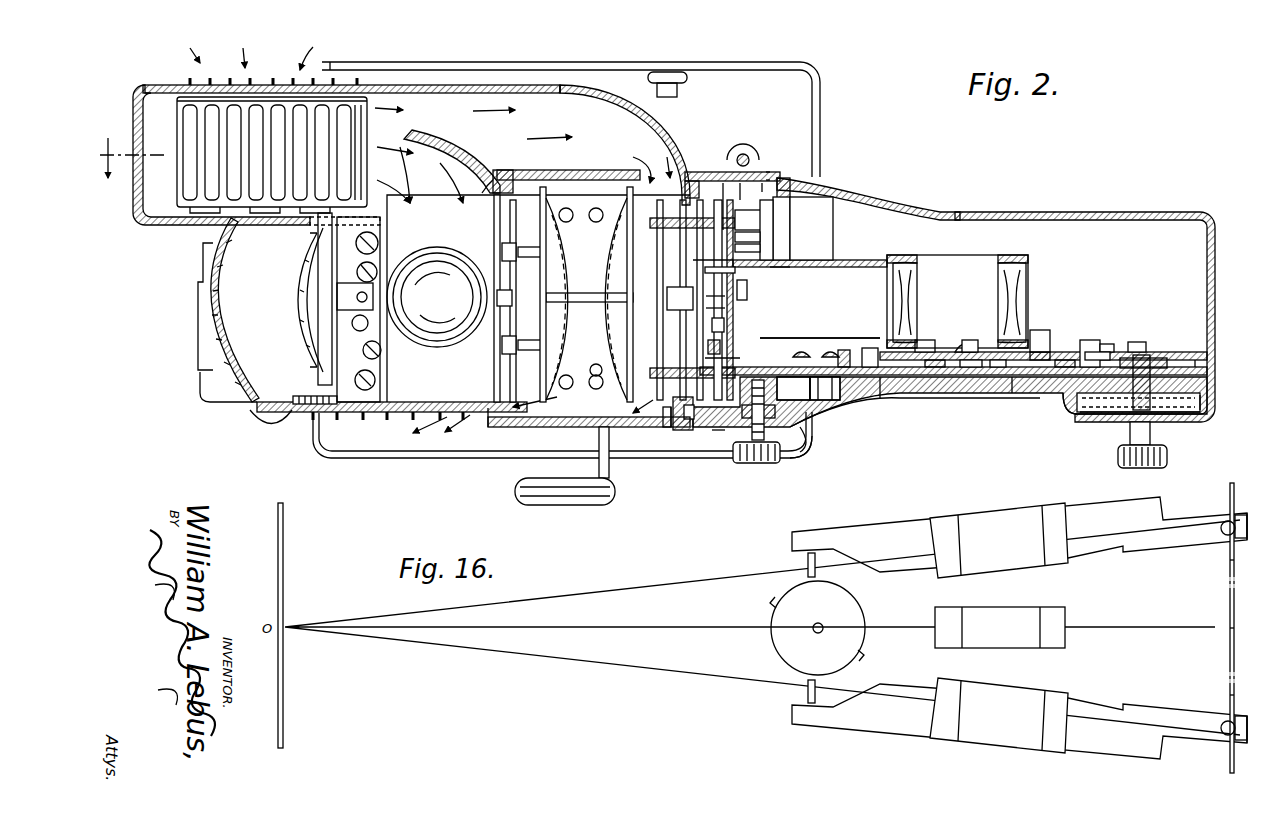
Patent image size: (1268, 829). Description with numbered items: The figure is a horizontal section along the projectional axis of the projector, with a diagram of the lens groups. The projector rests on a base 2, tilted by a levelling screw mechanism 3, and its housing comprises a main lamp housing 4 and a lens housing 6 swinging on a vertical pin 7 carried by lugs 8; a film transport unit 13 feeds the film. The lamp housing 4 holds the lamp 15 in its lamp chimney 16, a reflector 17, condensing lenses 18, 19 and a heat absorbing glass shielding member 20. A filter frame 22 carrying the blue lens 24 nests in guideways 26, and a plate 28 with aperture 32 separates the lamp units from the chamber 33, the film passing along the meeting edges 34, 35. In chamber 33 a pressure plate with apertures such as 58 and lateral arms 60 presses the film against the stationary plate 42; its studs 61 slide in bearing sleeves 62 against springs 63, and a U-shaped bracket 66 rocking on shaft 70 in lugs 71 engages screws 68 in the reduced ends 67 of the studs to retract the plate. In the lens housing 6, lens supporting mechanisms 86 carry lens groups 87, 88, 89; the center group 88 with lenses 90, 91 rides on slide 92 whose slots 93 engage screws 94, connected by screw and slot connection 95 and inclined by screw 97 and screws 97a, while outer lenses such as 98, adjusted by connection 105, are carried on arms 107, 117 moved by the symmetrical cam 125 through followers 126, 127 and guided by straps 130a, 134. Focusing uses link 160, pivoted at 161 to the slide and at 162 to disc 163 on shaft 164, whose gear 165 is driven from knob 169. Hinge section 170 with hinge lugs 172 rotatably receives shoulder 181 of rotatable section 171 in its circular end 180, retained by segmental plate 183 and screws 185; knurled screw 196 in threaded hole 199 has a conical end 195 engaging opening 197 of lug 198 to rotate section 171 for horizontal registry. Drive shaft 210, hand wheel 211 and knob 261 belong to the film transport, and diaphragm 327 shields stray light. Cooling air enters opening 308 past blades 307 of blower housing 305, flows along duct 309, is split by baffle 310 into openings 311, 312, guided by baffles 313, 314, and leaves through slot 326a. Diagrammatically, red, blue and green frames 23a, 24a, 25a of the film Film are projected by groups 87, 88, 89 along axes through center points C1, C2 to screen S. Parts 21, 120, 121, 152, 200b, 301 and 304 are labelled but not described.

In FIG. 2, the base 2 is at (470, 66).
In FIG. 2, the levelling screw mechanism 3 is at (132, 148).
In FIG. 2, the main casing or lamp housing 4 is at (248, 420).
In FIG. 2, the lens housing 6 is at (1068, 208).
In FIG. 2, the vertically disposed pin 7 is at (747, 146).
In FIG. 2, the lugs 8 is at (705, 175).
In FIG. 2, the film transport unit 13 is at (712, 97).
In FIG. 2, the lamp 15 is at (432, 330).
In FIG. 2, the lamp chimney 16 is at (500, 330).
In FIG. 2, the reflector 17 is at (305, 285).
In FIG. 2, the condensing lens 18 is at (553, 222).
In FIG. 2, the condensing lens 19 is at (625, 250).
In FIG. 2, the heat absorbing glass shielding member 20 is at (640, 240).
In FIG. 2, the pin 21 is at (734, 357).
In FIG. 2, the removable frame 22 is at (730, 268).
In FIG. 2, the colored lens 24 is at (680, 298).
In FIG. 2, the guideways 26 is at (748, 251).
In FIG. 2, the plate 28 is at (720, 314).
In FIG. 2, the aperture 32 is at (720, 300).
In FIG. 2, the chamber 33 is at (720, 468).
In FIG. 2, the meeting edge of lens housing 34 is at (768, 180).
In FIG. 2, the forward face edge of main housing 35 is at (768, 172).
In FIG. 2, the stationary plate 42 is at (735, 327).
In FIG. 2, the aperture 58 is at (748, 287).
In FIG. 2, the lateral arms 60 is at (735, 205).
In FIG. 2, the studs 61 is at (690, 216).
In FIG. 2, the bearing sleeve members 62 is at (723, 178).
In FIG. 2, the springs 63 is at (700, 469).
In FIG. 2, the U-shaped bracket 66 is at (590, 368).
In FIG. 2, the reduced ends 67 is at (655, 215).
In FIG. 2, the screws 68 is at (640, 230).
In FIG. 2, the shaft 70 is at (665, 427).
In FIG. 2, the lugs 71 is at (669, 428).
In FIG. 2, the lens supporting mechanisms 86 is at (1030, 255).
In FIG. 16, the lens group 87 is at (978, 510).
In FIG. 2, the center lens group 88 is at (950, 262).
In FIG. 16, the center lens group 88 is at (1060, 607).
In FIG. 16, the lens group 89 is at (1045, 690).
In FIG. 2, the lens 90 is at (1030, 284).
In FIG. 2, the lens 91 is at (897, 292).
In FIG. 2, the slide 92 is at (888, 385).
In FIG. 2, the slots 93 is at (1012, 393).
In FIG. 2, the screws 94 is at (930, 355).
In FIG. 2, the screw and slot connection 95 is at (972, 345).
In FIG. 2, the screw 97 is at (868, 348).
In FIG. 2, the lateral spaced screws 97a is at (1037, 350).
In FIG. 2, the lens 98 is at (722, 347).
In FIG. 2, the screw and slot connection 105 is at (752, 237).
In FIG. 16, the arm 107 is at (875, 532).
In FIG. 2, the arm 117 is at (838, 389).
In FIG. 16, the arm 117 is at (857, 730).
In FIG. 2, the pivot 120 is at (1205, 399).
In FIG. 16, the pivot 120 is at (1224, 526).
In FIG. 16, the pivot 121 is at (1224, 728).
In FIG. 2, the symmetrical cam 125 is at (1198, 366).
In FIG. 16, the symmetrical cam 125 is at (795, 655).
In FIG. 16, the adjustable follower 126 is at (805, 560).
In FIG. 16, the adjustable follower 127 is at (805, 700).
In FIG. 2, the vertical retaining strap 130a is at (1050, 396).
In FIG. 2, the strap 134 is at (812, 412).
In FIG. 2, the post 152 is at (842, 350).
In FIG. 2, the connecting link 160 is at (1106, 344).
In FIG. 2, the pivot 161 is at (1092, 344).
In FIG. 2, the off-center pivotal connection 162 is at (1137, 342).
In FIG. 2, the disc 163 is at (1145, 356).
In FIG. 2, the shaft 164 is at (1158, 358).
In FIG. 2, the gear 165 is at (1210, 414).
In FIG. 2, the hand knob 169 is at (1118, 455).
In FIG. 2, the housing section 170 is at (765, 162).
In FIG. 2, the housing section 171 is at (830, 188).
In FIG. 2, the hinge lugs 172 is at (740, 182).
In FIG. 2, the circular end 180 is at (788, 455).
In FIG. 2, the circular shoulder portion 181 is at (790, 200).
In FIG. 2, the segmental plate 183 is at (780, 242).
In FIG. 2, the screws 185 is at (785, 221).
In FIG. 2, the conical end 195 is at (796, 389).
In FIG. 2, the knurled hand screw 196 is at (748, 465).
In FIG. 2, the opening 197 is at (805, 340).
In FIG. 2, the lug 198 is at (743, 426).
In FIG. 2, the threaded hole 199 is at (768, 455).
In FIG. 2, the plate 200b is at (789, 271).
In FIG. 2, the drive shaft 210 is at (599, 443).
In FIG. 2, the hand wheel 211 is at (580, 504).
In FIG. 2, the hand knob 261 is at (670, 72).
In FIG. 2, the boss 301 is at (200, 352).
In FIG. 2, the opening 304 is at (265, 225).
In FIG. 2, the blower housing 305 is at (158, 97).
In FIG. 2, the peripherally disposed blades 307 is at (195, 215).
In FIG. 2, the air opening 308 is at (270, 87).
In FIG. 2, the blower duct 309 is at (405, 80).
In FIG. 2, the dividing baffle 310 is at (425, 133).
In FIG. 2, the lamp housing opening 311 is at (483, 192).
In FIG. 2, the lamp housing opening 312 is at (650, 182).
In FIG. 2, the baffle 313 is at (382, 228).
In FIG. 2, the baffle 314 is at (493, 220).
In FIG. 2, the vertical slot 326a is at (486, 420).
In FIG. 2, the light shielding diaphragm 327 is at (860, 265).
In FIG. 16, the screen S is at (281, 616).
In FIG. 16, the film Film is at (1238, 475).
In FIG. 16, the center point C1 is at (1246, 515).
In FIG. 16, the center point C2 is at (1251, 745).
In FIG. 16, the red film frame 23a is at (1228, 570).
In FIG. 16, the blue film frame 24a is at (1228, 611).
In FIG. 16, the green film frame 25a is at (1228, 690).